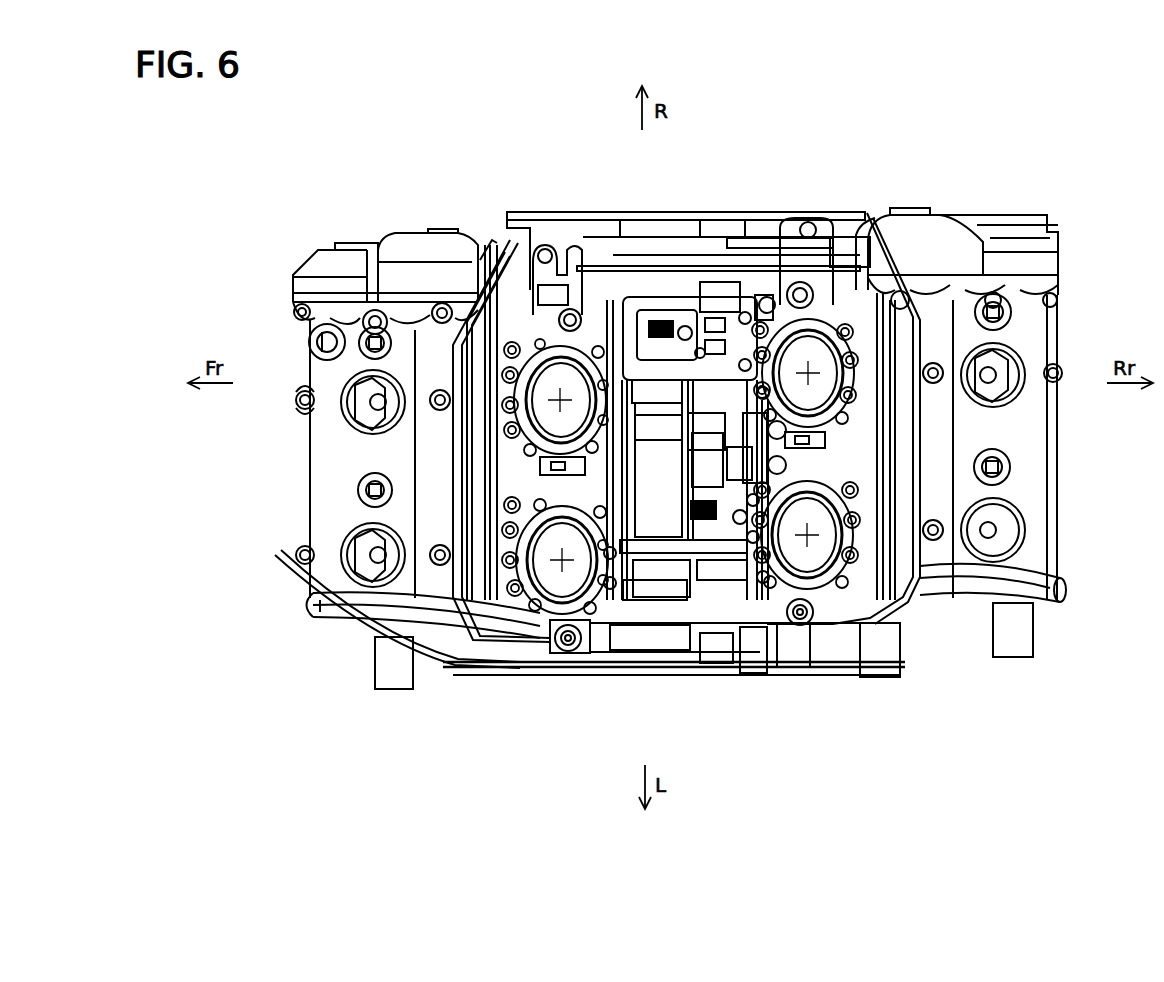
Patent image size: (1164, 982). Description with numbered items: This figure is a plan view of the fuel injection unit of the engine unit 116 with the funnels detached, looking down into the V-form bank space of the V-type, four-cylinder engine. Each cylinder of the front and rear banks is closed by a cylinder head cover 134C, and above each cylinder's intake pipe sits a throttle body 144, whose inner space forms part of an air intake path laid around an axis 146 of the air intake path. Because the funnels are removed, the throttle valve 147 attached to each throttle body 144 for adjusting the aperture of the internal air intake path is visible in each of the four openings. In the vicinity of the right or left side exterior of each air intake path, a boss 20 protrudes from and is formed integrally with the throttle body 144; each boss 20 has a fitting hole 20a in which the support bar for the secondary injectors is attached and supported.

The engine unit 116 is at (291, 258).
The cylinder head cover 134C is at (332, 474).
The throttle body 144 is at (492, 240).
The axis of the air intake path 146 is at (477, 303).
The throttle valve 147 is at (573, 385).
The boss 20 is at (528, 267).
The fitting hole 20a is at (552, 395).